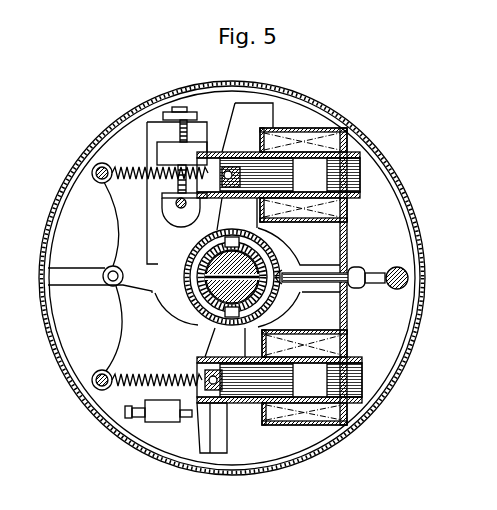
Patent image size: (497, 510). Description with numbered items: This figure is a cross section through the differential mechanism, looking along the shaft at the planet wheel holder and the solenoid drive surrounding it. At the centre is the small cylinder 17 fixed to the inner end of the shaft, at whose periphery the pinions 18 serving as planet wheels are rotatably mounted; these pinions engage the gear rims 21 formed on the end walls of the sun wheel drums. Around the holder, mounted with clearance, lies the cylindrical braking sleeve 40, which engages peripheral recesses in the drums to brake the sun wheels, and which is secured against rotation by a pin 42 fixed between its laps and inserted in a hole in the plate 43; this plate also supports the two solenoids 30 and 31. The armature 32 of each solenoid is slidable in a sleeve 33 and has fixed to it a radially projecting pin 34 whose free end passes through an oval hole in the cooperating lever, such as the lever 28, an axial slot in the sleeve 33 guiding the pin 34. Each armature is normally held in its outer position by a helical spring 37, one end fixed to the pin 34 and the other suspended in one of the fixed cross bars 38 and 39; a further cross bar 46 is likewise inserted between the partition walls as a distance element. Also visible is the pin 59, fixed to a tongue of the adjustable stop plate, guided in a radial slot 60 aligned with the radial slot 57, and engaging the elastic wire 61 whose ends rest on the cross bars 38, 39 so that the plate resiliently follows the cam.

The cylinder 17 is at (262, 260).
The pinions 18 is at (203, 322).
The gear rims 21 is at (198, 282).
The lever 28 is at (200, 432).
The solenoid 30 is at (300, 425).
The solenoid 31 is at (310, 127).
The armature 32 is at (270, 170).
The sleeve 33 is at (222, 150).
The pin 34 is at (258, 103).
The helical spring 37 is at (127, 165).
The cross bar 38 is at (97, 164).
The cross bar 39 is at (93, 387).
The braking sleeve 40 is at (189, 251).
The pin 42 is at (320, 280).
The plate 43 is at (347, 218).
The cross bar 46 is at (410, 277).
The radial slot 57 is at (385, 268).
The pin 59 is at (108, 266).
The radial slot 60 is at (78, 277).
The elastic wire 61 is at (118, 333).